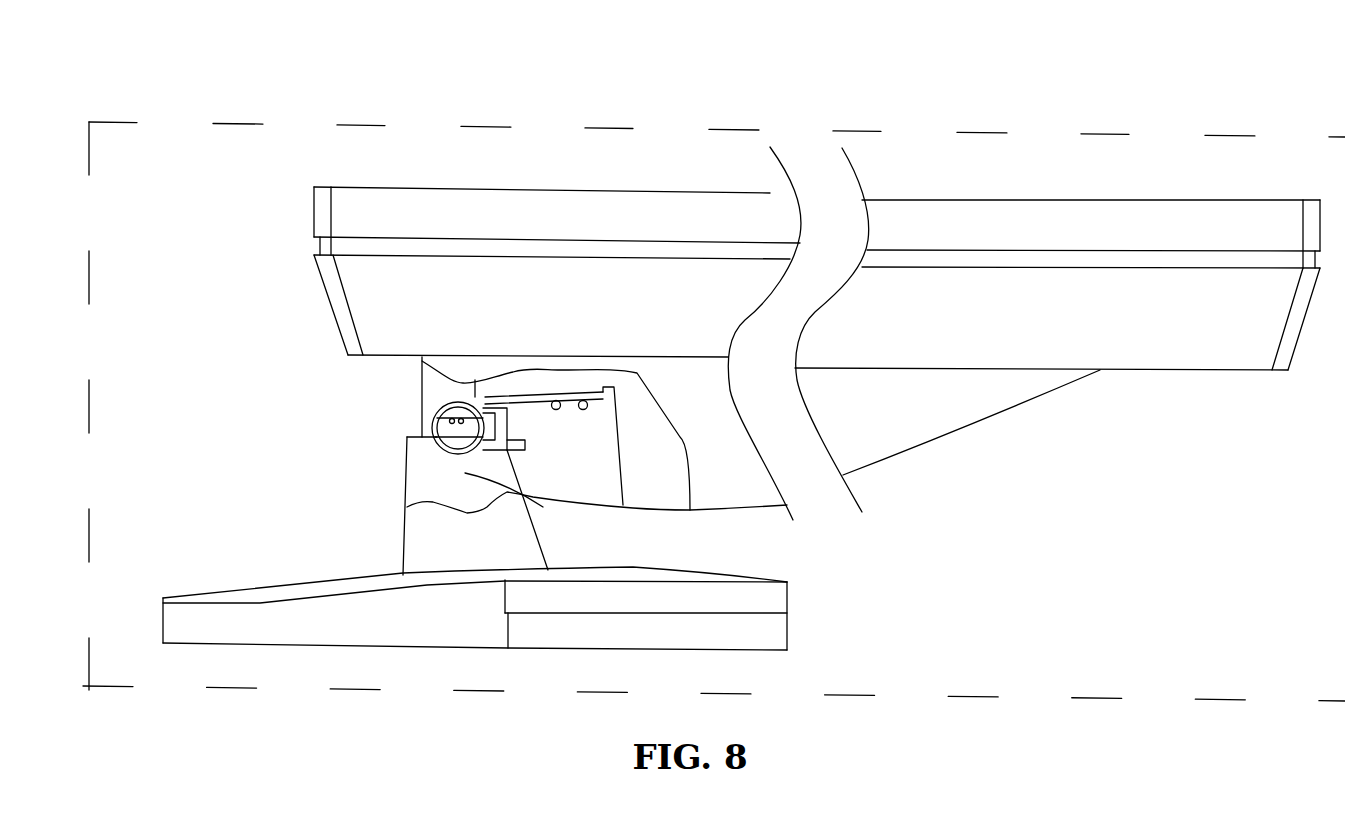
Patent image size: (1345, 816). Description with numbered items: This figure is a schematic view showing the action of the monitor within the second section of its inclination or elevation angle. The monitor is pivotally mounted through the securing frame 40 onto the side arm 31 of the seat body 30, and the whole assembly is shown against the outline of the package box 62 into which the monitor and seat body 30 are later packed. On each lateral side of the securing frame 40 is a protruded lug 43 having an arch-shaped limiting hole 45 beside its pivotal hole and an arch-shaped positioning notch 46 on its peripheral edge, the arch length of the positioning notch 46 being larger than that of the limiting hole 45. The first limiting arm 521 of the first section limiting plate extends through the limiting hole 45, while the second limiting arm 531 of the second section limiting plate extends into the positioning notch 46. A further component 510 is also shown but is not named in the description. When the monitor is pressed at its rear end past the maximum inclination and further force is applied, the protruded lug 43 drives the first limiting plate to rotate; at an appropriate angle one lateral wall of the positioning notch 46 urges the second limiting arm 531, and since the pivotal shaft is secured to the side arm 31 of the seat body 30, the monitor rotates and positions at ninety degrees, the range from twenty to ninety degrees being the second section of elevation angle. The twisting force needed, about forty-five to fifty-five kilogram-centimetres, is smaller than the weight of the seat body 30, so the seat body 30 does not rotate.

The package box 62 is at (588, 126).
The securing frame 40 is at (436, 328).
The first limiting arm 521 is at (478, 414).
The positioning notch 46 is at (433, 413).
The shaft 510 is at (447, 427).
The second limiting arm 531 is at (432, 439).
The protruded lug 43 is at (512, 418).
The limiting hole 45 is at (500, 442).
The side arm 31 is at (462, 544).
The seat body 30 is at (780, 627).